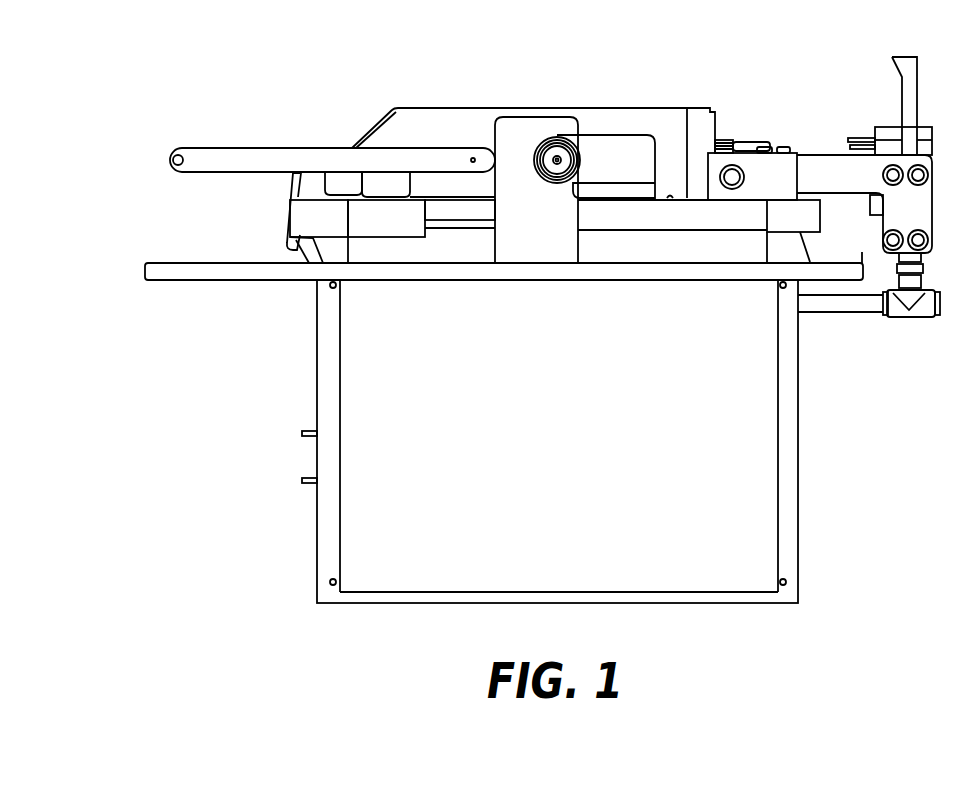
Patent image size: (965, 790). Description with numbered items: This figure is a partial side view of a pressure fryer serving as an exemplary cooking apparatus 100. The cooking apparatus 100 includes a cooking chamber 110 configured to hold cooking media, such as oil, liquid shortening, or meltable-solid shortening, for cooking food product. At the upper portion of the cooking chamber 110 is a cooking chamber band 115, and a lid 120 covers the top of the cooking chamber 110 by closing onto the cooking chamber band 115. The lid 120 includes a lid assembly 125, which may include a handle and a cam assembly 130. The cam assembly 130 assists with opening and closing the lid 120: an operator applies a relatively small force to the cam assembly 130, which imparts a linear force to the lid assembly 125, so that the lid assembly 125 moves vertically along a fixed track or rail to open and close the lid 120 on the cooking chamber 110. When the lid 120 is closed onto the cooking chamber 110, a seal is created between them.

The cooking apparatus 100 is at (292, 653).
The cooking chamber 110 is at (292, 457).
The cooking chamber band 115 is at (368, 246).
The lid 120 is at (310, 211).
The lid assembly 125 is at (263, 93).
The cam assembly 130 is at (450, 143).